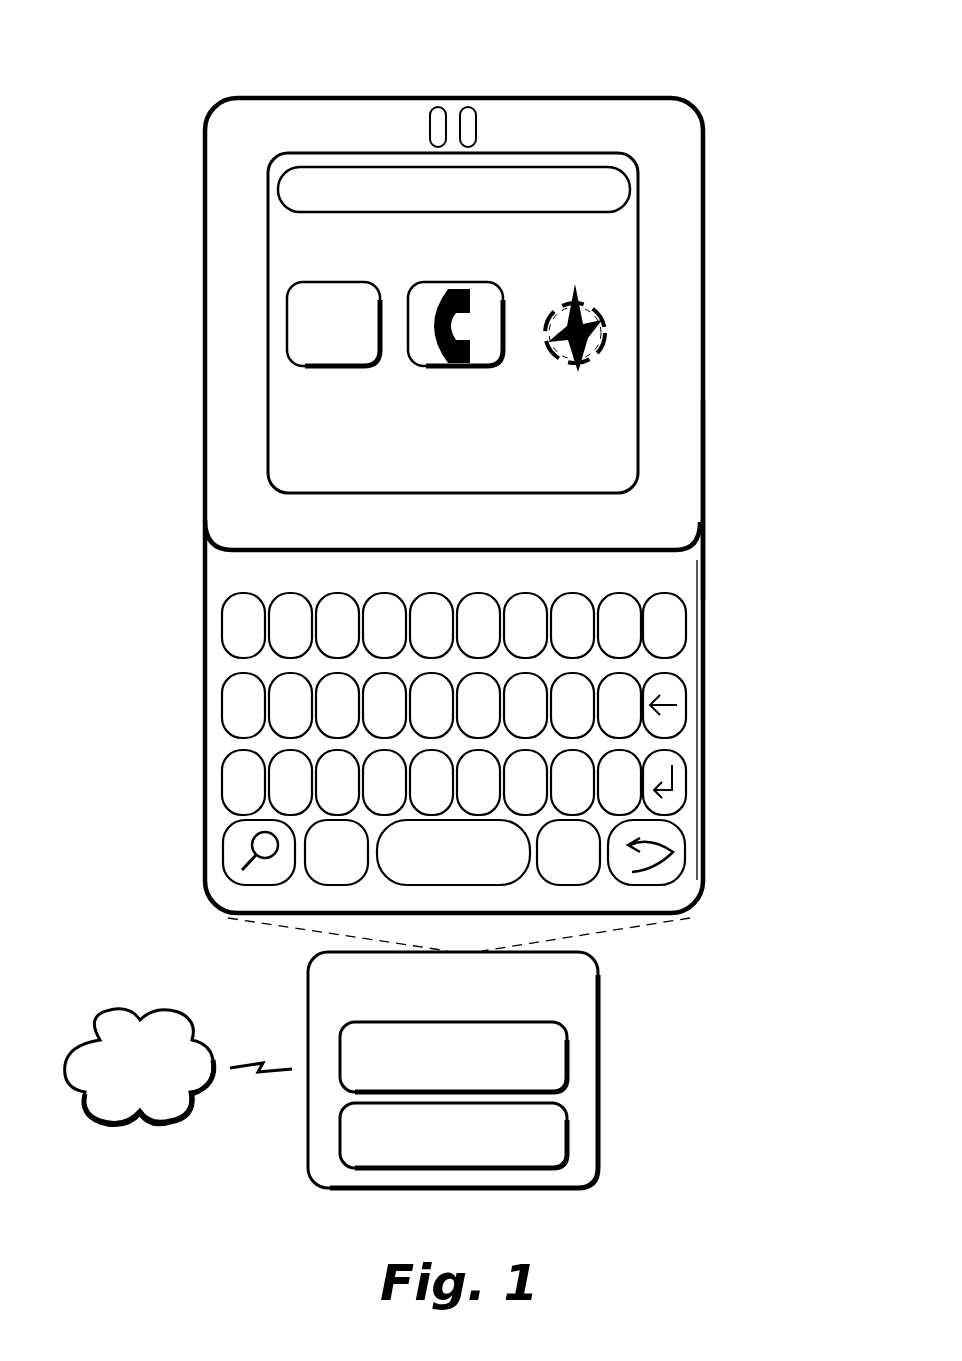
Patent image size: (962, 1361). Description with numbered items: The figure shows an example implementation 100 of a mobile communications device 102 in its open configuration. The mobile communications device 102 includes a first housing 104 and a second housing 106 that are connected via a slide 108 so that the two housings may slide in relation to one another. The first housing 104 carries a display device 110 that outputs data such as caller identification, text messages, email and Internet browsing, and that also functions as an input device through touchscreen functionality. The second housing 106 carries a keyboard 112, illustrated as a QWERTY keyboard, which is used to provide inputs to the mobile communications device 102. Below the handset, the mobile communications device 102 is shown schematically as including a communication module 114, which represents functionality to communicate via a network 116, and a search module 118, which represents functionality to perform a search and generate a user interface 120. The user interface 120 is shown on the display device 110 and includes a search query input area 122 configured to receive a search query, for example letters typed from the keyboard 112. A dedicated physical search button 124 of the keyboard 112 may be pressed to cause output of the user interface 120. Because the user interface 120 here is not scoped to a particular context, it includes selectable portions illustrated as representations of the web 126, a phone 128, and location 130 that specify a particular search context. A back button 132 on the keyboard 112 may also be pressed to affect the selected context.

The example implementation 100 is at (128, 64).
The mobile communications device 102 is at (453, 1070).
The first housing 104 is at (222, 148).
The second housing 106 is at (215, 572).
The slide 108 is at (705, 512).
The display device 110 is at (453, 310).
The keyboard 112 is at (724, 578).
The communication module 114 is at (453, 1057).
The network 116 is at (178, 1067).
The search module 118 is at (453, 1135).
The user interface 120 is at (455, 365).
The search query input area 122 is at (378, 168).
The dedicated physical search button 124 is at (222, 840).
The representation of the web 126 is at (377, 367).
The representation of a phone 128 is at (500, 367).
The representation of location 130 is at (580, 368).
The back button 132 is at (686, 837).